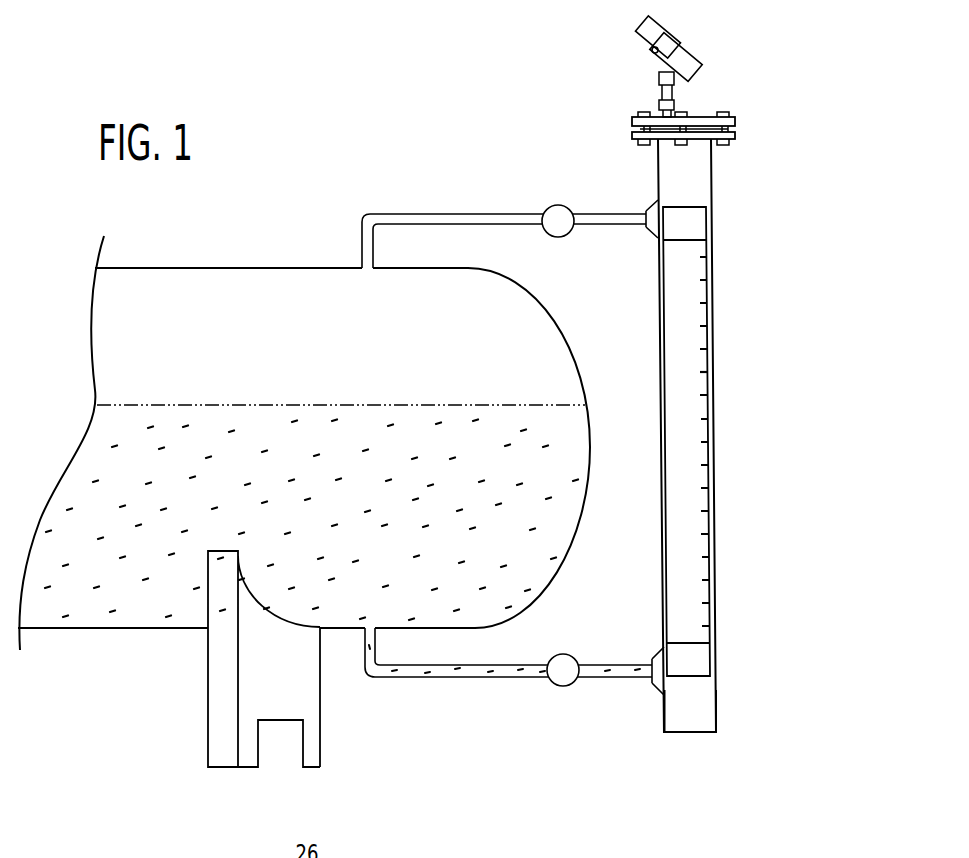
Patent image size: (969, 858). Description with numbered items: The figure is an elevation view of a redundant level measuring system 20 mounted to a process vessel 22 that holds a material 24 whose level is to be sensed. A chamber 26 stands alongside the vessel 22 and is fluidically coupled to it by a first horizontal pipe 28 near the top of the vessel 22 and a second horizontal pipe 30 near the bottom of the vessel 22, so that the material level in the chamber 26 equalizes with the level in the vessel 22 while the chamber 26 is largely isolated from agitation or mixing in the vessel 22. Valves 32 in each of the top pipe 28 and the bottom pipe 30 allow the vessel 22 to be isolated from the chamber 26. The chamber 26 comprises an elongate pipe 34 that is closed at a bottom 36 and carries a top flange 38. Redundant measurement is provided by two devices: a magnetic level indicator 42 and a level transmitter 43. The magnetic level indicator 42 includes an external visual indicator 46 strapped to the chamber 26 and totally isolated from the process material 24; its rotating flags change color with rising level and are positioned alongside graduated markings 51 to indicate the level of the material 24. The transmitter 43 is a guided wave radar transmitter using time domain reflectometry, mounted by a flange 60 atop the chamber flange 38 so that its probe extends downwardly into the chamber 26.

The redundant level measuring system 20 is at (586, 115).
The vessel 22 is at (550, 352).
The material 24 is at (254, 404).
The chamber 26 is at (698, 183).
The first horizontal pipe 28 is at (458, 214).
The second horizontal pipe 30 is at (463, 678).
The valves 32 is at (558, 203).
The elongate pipe 34 is at (717, 707).
The bottom 36 is at (688, 733).
The top flange 38 is at (737, 132).
The magnetic level indicator 42 is at (756, 317).
The level transmitter 43 is at (697, 38).
The visual indicator 46 is at (708, 247).
The graduated markings 51 is at (704, 379).
The flange 60 is at (737, 119).